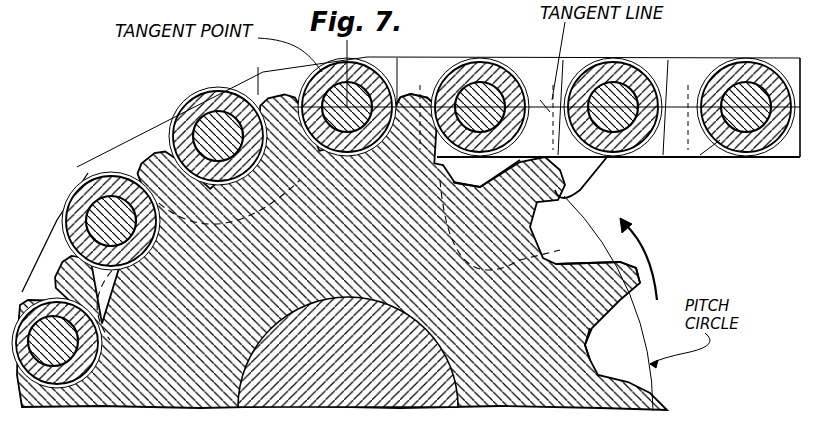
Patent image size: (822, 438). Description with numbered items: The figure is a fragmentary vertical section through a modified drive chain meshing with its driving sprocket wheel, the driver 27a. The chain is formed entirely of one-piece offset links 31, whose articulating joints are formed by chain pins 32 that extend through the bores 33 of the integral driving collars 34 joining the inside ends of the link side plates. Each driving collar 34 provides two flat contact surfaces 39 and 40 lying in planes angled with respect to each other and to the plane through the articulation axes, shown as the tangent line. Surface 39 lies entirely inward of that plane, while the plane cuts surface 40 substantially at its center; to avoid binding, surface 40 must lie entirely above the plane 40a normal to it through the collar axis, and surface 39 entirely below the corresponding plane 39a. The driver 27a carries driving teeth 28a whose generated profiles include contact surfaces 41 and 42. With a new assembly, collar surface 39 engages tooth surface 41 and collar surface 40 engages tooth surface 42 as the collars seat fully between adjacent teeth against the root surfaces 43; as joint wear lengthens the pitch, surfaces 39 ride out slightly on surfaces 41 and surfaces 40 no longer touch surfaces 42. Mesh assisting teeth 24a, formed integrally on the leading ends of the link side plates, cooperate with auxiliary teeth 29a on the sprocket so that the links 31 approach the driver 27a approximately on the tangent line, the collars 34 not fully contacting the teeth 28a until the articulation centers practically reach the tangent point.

The mesh assisting teeth 24a is at (605, 170).
The driver 27a is at (490, 408).
The driving teeth 28a is at (110, 157).
The auxiliary sets of teeth 29a is at (262, 210).
The one-piece offset links 31 is at (135, 135).
The chain pins 32 is at (222, 126).
The bores 33 is at (480, 82).
The driving collars 34 is at (207, 96).
The contact surface 39 is at (770, 140).
The plane 39a is at (560, 122).
The contact surface 40 is at (708, 106).
The plane 40a is at (430, 110).
The contact surface 41 is at (583, 262).
The tooth surface 42 is at (583, 194).
The surfaces 43 is at (588, 350).